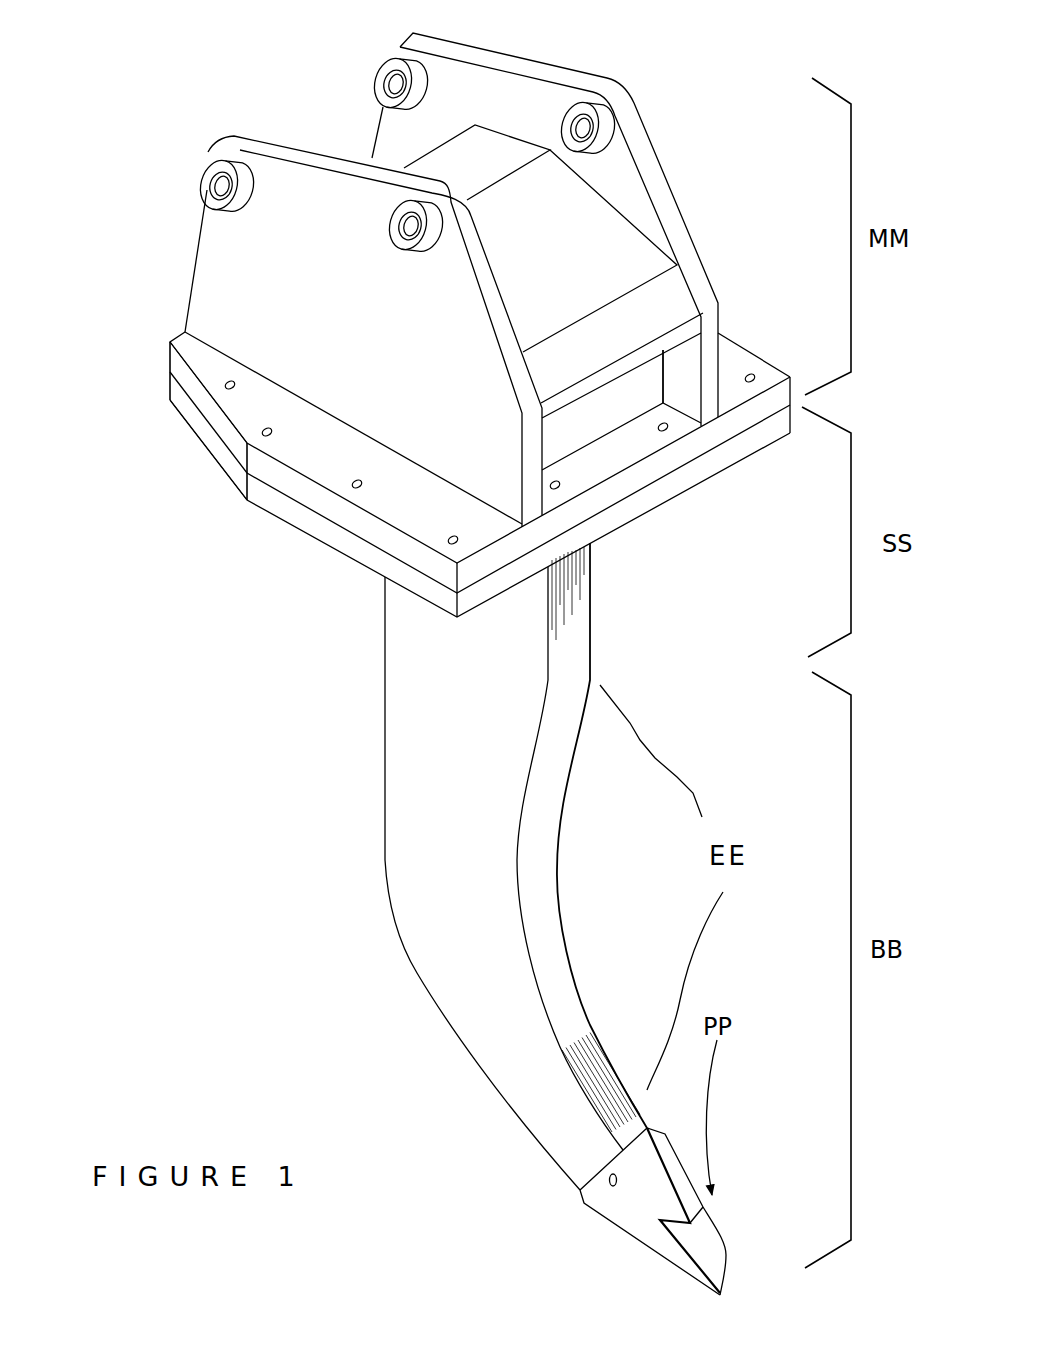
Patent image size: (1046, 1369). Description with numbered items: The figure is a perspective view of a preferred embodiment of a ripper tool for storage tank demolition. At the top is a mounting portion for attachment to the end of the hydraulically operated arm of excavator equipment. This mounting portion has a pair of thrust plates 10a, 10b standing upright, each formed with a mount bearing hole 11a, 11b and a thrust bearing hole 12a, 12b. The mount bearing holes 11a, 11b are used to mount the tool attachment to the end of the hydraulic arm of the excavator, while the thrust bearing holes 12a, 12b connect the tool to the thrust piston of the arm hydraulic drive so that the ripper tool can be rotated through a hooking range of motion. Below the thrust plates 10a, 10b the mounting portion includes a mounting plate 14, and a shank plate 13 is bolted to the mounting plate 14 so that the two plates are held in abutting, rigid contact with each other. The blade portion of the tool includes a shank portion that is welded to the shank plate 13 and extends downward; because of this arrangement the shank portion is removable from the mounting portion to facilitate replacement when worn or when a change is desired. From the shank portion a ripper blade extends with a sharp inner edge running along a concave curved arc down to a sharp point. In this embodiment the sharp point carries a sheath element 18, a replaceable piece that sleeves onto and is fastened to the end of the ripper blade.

The thrust plate 10a is at (678, 221).
The thrust plate 10b is at (226, 263).
The mount bearing hole 11a is at (606, 125).
The mount bearing hole 11b is at (392, 228).
The thrust bearing hole 12a is at (372, 70).
The thrust bearing hole 12b is at (198, 170).
The shank plate 13 is at (288, 528).
The mounting plate 14 is at (220, 423).
The sheath element 18 is at (594, 1230).